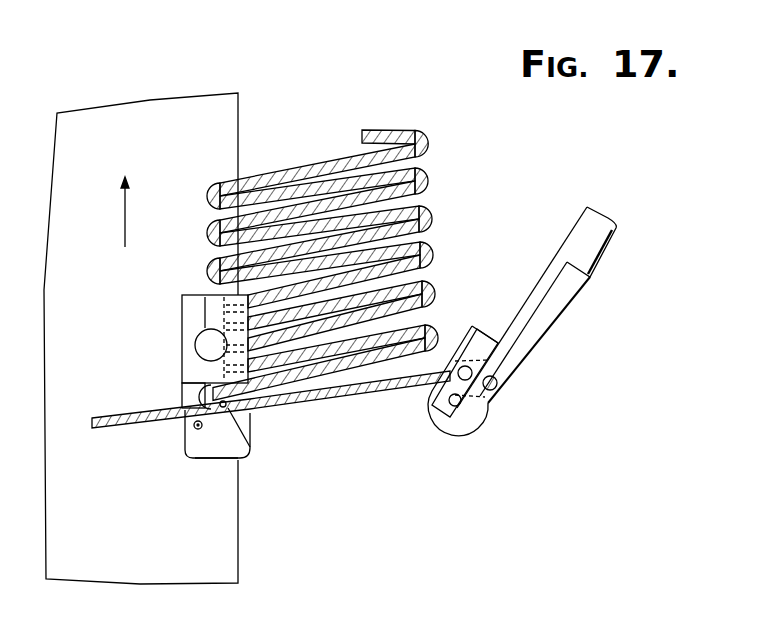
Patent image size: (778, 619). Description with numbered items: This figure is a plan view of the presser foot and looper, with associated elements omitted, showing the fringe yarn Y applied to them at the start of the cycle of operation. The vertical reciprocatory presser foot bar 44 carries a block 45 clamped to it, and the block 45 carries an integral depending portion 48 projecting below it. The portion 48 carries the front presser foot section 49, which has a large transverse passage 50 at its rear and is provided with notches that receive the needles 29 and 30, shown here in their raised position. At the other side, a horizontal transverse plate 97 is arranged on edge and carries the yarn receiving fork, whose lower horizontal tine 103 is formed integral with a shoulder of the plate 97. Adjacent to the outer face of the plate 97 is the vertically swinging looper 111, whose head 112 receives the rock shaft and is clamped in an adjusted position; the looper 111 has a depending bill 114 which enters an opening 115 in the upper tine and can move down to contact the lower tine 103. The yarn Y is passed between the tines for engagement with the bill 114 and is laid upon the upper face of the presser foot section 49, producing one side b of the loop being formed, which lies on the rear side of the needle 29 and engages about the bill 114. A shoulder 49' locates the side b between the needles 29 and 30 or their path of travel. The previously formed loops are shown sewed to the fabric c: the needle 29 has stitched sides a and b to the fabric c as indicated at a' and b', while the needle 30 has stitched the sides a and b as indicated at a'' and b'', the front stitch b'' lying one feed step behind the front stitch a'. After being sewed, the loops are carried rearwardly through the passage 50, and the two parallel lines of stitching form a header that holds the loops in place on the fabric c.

The fabric c is at (141, 338).
The side of loop a is at (347, 297).
The side of loop b is at (335, 317).
The stitch a' is at (181, 298).
The stitch b' is at (196, 225).
The stitch a'' is at (317, 176).
The front stitch b'' is at (317, 170).
The fringe yarn Y is at (438, 281).
The block 45 is at (182, 320).
The presser foot bar 44 is at (195, 344).
The depending portion 48 is at (182, 392).
The transverse passage 50 is at (247, 408).
The needle 29 is at (200, 433).
The needle 30 is at (249, 450).
The shoulder 49' is at (175, 439).
The front presser foot section 49 is at (216, 490).
The head 112 is at (585, 274).
The looper 111 is at (523, 317).
The lower horizontal tine 103 is at (523, 352).
The transverse plate 97 is at (494, 333).
The bill 114 is at (503, 388).
The opening 115 is at (482, 403).